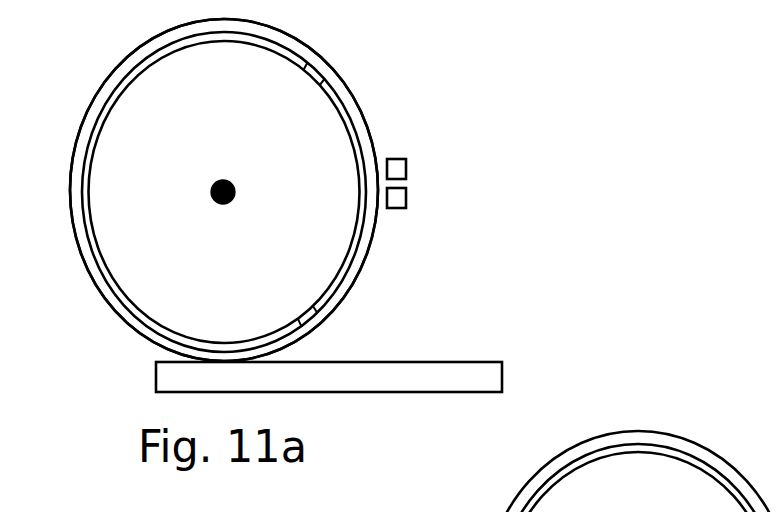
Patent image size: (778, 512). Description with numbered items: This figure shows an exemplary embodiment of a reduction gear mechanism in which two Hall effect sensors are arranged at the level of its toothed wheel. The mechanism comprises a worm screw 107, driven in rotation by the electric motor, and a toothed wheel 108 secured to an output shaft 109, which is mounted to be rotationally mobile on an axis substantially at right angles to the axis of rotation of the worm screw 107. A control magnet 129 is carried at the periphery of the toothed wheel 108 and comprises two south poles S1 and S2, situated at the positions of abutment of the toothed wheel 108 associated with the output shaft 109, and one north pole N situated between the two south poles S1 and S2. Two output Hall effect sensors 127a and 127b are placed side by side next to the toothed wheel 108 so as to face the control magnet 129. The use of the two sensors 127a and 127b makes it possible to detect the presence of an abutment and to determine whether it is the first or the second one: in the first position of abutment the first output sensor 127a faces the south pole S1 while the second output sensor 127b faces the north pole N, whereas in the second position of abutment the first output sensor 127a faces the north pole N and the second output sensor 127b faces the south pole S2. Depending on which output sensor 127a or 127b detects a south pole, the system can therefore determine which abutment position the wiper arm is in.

The toothed wheel 108 is at (112, 302).
The control magnet 129 is at (352, 94).
The output shaft 109 is at (213, 200).
The worm screw 107 is at (417, 375).
The first output Hall effect sensor 127a is at (400, 167).
The second output Hall effect sensor 127b is at (400, 197).
The north pole N is at (365, 182).
The first south pole S1 is at (308, 73).
The second south pole S2 is at (305, 313).